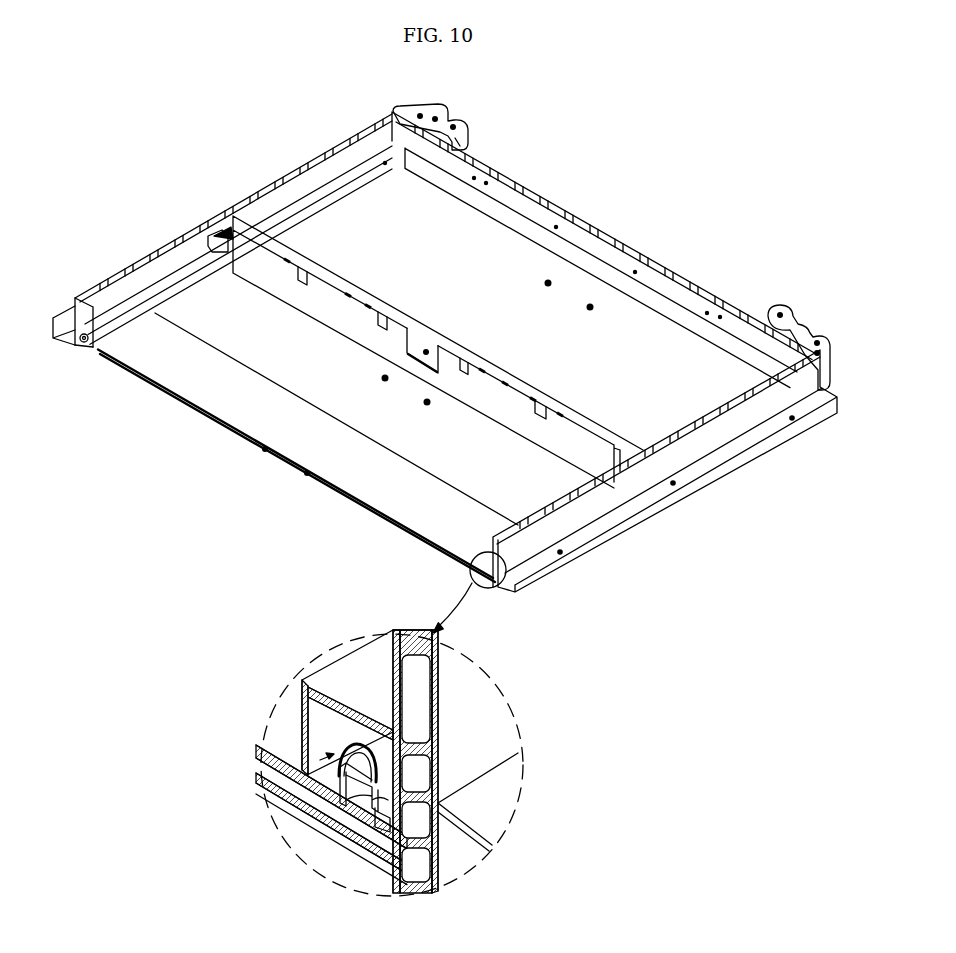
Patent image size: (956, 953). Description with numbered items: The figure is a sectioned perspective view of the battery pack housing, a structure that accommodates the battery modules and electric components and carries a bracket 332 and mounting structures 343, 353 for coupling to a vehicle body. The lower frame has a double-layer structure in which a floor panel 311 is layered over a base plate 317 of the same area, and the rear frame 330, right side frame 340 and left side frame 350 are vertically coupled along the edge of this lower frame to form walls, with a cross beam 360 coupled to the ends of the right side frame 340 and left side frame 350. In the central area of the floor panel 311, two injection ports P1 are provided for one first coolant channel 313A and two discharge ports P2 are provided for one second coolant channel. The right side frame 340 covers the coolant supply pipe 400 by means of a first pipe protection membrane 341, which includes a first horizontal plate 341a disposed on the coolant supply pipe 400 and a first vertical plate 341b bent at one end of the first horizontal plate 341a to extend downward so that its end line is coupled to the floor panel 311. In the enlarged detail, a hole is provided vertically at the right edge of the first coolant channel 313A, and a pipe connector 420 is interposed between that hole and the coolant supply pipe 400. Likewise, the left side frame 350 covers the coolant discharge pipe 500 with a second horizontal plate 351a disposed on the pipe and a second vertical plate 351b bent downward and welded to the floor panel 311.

The rear frame 330 is at (623, 253).
The bracket 332 is at (462, 128).
The right side frame 340 is at (710, 440).
The mounting structure 343 is at (650, 502).
The first pipe protection membrane 341 is at (373, 727).
The first horizontal plate 341a is at (346, 675).
The first vertical plate 341b is at (337, 604).
The left side frame 350 is at (162, 262).
The second horizontal plate 351a is at (128, 302).
The second vertical plate 351b is at (108, 345).
The mounting structure 353 is at (63, 317).
The cross beam 360 is at (238, 230).
The coolant discharge pipe 500 is at (82, 344).
The floor panel 311 is at (353, 490).
The first coolant channel 313A is at (258, 763).
The base plate 317 is at (384, 520).
The coolant supply pipe 400 is at (340, 748).
The pipe connector 420 is at (375, 805).
The injection port P1 is at (428, 349).
The discharge port P2 is at (587, 307).